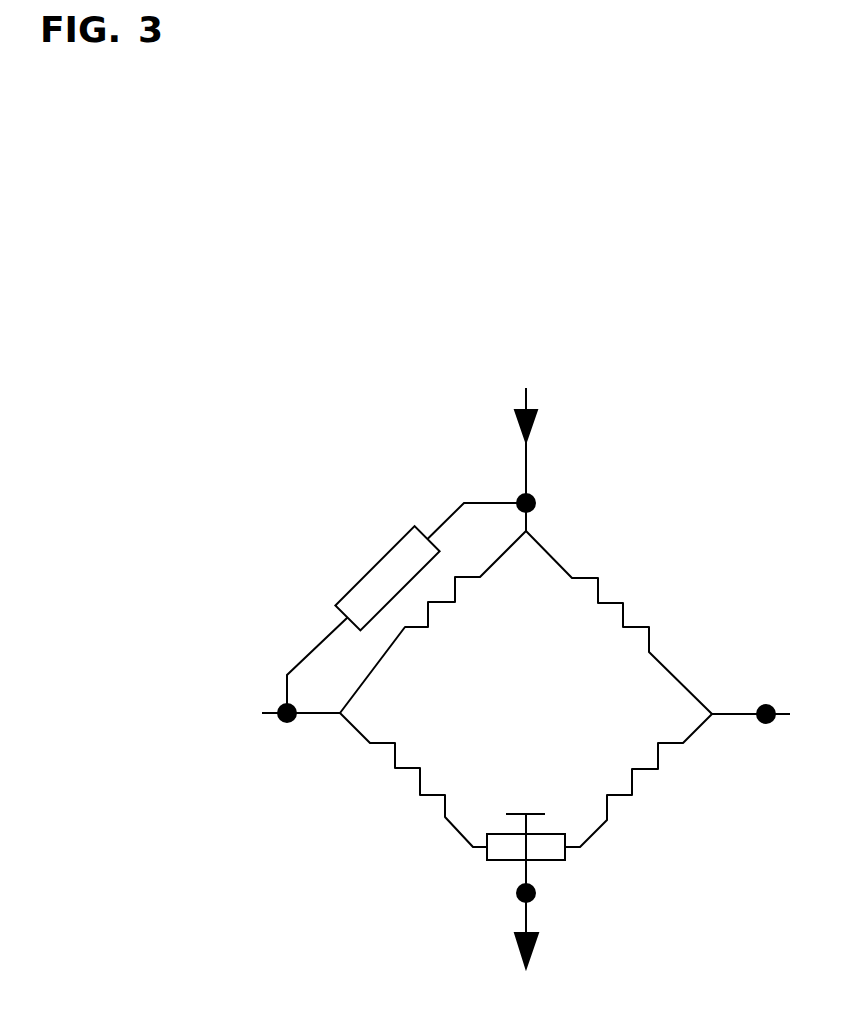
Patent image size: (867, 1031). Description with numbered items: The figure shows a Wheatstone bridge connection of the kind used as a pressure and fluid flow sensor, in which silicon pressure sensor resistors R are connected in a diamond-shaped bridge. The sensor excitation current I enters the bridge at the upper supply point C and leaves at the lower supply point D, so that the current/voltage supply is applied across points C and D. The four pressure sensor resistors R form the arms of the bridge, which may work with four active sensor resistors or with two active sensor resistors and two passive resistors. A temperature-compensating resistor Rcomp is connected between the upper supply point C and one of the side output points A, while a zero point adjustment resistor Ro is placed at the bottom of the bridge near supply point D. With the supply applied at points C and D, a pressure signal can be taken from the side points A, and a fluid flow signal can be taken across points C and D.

The sensor excitation current I is at (516, 691).
The supply point C is at (541, 511).
The pressure sensor resistor R is at (526, 689).
The pressure signal point A is at (526, 730).
The temperature-compensating resistor Rcomp is at (406, 608).
The zero point adjustment resistor Ro is at (506, 862).
The supply point D is at (560, 892).